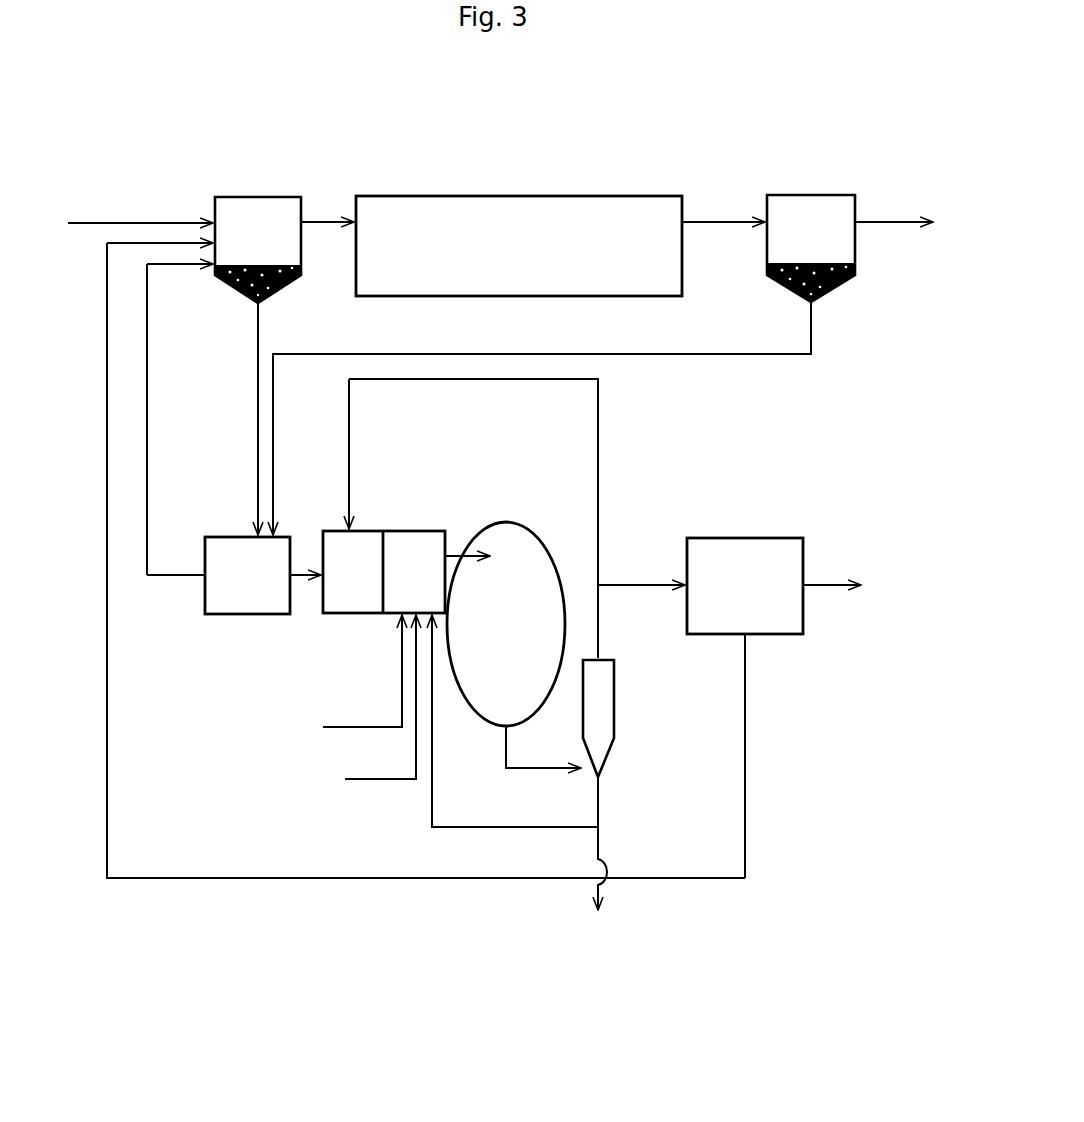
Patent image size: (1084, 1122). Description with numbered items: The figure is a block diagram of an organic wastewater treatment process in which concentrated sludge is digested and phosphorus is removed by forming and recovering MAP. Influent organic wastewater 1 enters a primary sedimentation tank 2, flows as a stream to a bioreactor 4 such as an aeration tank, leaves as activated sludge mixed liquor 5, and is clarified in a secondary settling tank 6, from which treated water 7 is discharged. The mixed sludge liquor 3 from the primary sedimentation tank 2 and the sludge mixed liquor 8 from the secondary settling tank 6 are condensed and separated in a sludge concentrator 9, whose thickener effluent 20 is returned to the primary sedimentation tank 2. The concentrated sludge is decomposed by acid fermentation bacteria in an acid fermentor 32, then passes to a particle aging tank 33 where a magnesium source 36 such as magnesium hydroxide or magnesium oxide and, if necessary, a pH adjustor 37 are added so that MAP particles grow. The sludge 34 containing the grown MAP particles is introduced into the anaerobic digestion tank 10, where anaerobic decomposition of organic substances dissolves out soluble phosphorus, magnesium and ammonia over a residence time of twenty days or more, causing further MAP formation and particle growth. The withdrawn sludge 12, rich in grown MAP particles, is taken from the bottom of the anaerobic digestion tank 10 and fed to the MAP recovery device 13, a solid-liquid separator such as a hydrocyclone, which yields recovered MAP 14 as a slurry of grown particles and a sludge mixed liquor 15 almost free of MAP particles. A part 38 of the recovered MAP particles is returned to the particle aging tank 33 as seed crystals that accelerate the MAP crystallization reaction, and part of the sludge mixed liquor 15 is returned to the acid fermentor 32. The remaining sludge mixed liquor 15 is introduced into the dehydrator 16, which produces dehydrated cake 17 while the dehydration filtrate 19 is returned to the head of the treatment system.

The influent organic wastewater 1 is at (126, 224).
The primary sedimentation tank 2 is at (232, 197).
The mixed sludge liquor 3 is at (258, 343).
The bioreactor 4 is at (540, 196).
The activated sludge mixed liquor 5 is at (718, 220).
The secondary settling tank 6 is at (815, 195).
The treated water 7 is at (910, 224).
The sludge mixed liquor 8 is at (815, 333).
The sludge concentrator 9 is at (222, 614).
The anaerobic digestion tank 10 is at (540, 523).
The withdrawn sludge 12 is at (515, 800).
The MAP recovery device 13 is at (614, 700).
The recovered MAP 14 is at (426, 600).
The sludge mixed liquor after separation and recovery of MAP particles 15 is at (600, 622).
The dehydrator 16 is at (752, 537).
The dehydrated cake 17 is at (855, 586).
The dehydration filtrate 19 is at (747, 717).
The thickener effluent 20 is at (160, 575).
The acid fermentor 32 is at (337, 613).
The particle aging tank 33 is at (410, 531).
The sludge to be introduced into the anaerobic digestion tank 34 is at (462, 545).
The magnesium source 36 is at (342, 679).
The pH adjustor 37 is at (360, 705).
The part of recovered MAP particles 38 is at (428, 806).